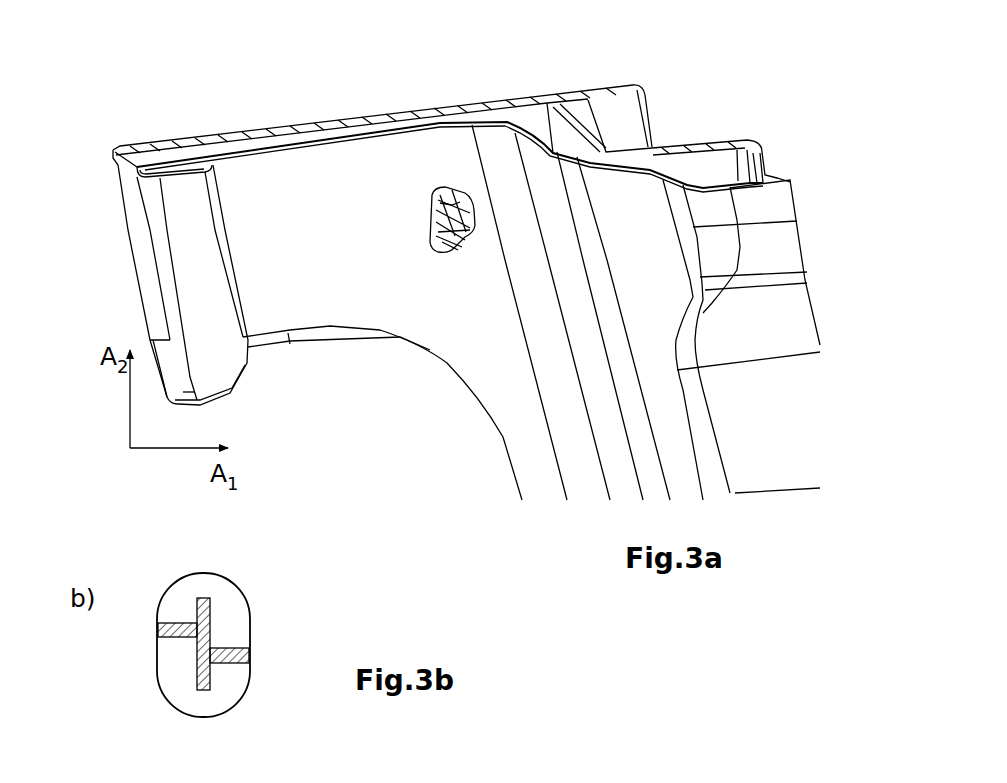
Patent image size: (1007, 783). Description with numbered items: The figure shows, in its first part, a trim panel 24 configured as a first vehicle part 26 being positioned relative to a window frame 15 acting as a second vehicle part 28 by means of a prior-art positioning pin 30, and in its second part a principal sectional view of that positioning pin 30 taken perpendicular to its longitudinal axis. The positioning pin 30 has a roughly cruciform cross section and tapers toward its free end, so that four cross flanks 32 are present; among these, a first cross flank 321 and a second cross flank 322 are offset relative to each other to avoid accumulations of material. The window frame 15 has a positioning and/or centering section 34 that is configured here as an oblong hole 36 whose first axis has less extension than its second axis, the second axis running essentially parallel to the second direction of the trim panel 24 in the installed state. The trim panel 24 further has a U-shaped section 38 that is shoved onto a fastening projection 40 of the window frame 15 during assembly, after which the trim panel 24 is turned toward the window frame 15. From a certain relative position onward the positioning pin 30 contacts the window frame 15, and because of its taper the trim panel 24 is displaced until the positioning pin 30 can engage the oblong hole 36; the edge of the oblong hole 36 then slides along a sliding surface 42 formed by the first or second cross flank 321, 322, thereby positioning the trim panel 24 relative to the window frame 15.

In FIG. 3A, the window frame 15 is at (382, 407).
In FIG. 3A, the trim panel 24 is at (451, 116).
In FIG. 3A, the first vehicle part 26 is at (358, 117).
In FIG. 3A, the second vehicle part 28 is at (330, 315).
In FIG. 3A, the positioning pin 30 is at (457, 240).
In FIG. 3B, the positioning pin 30 is at (199, 648).
In FIG. 3B, the cross flanks 32 is at (200, 598).
In FIG. 3B, the first cross flank 321 is at (170, 623).
In FIG. 3B, the second cross flank 322 is at (242, 663).
In FIG. 3A, the positioning and/or centering section 34 is at (396, 248).
In FIG. 3B, the positioning and/or centering section 34 is at (222, 648).
In FIG. 3A, the oblong hole 36 is at (396, 248).
In FIG. 3B, the oblong hole 36 is at (222, 648).
In FIG. 3A, the U-shaped section 38 is at (172, 123).
In FIG. 3A, the fastening projection 40 is at (227, 163).
In FIG. 3B, the sliding surface 42 is at (199, 652).